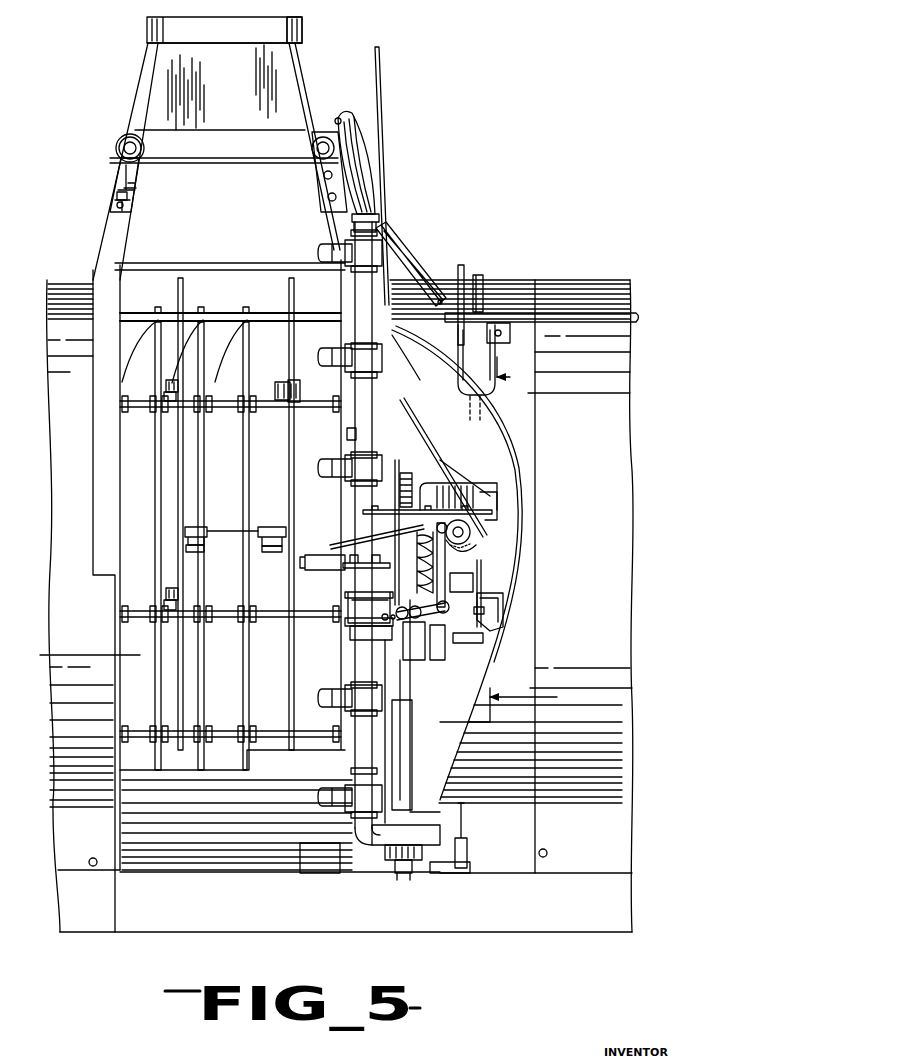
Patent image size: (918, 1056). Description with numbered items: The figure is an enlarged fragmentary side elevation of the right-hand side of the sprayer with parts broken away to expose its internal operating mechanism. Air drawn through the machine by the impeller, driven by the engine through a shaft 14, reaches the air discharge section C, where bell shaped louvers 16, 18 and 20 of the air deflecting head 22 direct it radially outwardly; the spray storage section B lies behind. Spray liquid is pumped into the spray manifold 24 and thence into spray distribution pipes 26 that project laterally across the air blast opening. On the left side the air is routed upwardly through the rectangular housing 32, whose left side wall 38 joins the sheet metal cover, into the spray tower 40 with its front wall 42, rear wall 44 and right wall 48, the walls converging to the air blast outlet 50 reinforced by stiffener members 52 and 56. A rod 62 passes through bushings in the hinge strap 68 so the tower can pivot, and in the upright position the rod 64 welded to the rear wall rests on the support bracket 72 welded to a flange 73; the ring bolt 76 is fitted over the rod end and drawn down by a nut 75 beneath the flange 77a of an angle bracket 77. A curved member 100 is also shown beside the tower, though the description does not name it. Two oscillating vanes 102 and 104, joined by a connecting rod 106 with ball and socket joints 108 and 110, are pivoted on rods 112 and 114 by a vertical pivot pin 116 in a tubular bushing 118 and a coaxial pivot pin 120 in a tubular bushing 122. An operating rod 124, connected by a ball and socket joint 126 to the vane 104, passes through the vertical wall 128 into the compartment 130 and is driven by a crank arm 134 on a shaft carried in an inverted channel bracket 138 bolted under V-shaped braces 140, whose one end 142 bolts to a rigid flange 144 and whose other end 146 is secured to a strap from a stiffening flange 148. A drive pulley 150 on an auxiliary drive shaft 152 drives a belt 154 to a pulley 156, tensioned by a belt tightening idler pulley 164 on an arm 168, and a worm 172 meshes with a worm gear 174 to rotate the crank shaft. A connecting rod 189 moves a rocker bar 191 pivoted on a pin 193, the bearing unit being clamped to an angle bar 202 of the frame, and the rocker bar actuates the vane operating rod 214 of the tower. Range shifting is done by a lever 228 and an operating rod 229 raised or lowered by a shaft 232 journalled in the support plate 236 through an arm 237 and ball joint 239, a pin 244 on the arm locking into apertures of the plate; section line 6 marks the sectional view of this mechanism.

The shaft 14 is at (358, 624).
The bell shaped louver 16 is at (158, 458).
The bell shaped louver 18 is at (202, 468).
The bell shaped louver 20 is at (246, 468).
The air deflecting head 22 is at (140, 537).
The spray manifold 24 is at (356, 297).
The spray distribution pipes 26 is at (333, 250).
The rectangular housing 32 is at (130, 240).
The left side wall 38 is at (250, 240).
The spray tower 40 is at (150, 72).
The front wall 42 is at (301, 75).
The rear wall 44 is at (147, 98).
The right wall 48 is at (243, 84).
The air blast outlet 50 is at (186, 38).
The stiffener member 52 is at (302, 29).
The stiffener member 56 is at (147, 30).
The rod 62 is at (312, 148).
The rod 64 is at (128, 138).
The hinge strap 68 is at (322, 185).
The support bracket 72 is at (110, 163).
The flange 73 is at (106, 260).
The nut 75 is at (113, 193).
The ring bolt 76 is at (117, 146).
The angle bracket 77 is at (129, 205).
The flange 77a is at (134, 185).
The curved arm 100 is at (357, 168).
The oscillating vane 102 is at (178, 505).
The oscillating vane 104 is at (290, 513).
The connecting rod 106 is at (215, 528).
The ball and socket joint 108 is at (200, 545).
The ball and socket joint 110 is at (270, 546).
The rod 112 is at (262, 398).
The rod 114 is at (224, 617).
The vertical pivot pin 116 is at (164, 396).
The tubular bushing 118 is at (166, 386).
The vertical pivot pin 120 is at (166, 602).
The tubular bushing 122 is at (168, 590).
The operating rod 124 is at (363, 540).
The ball and socket joint 126 is at (312, 560).
The vertical wall 128 is at (350, 432).
The compartment 130 is at (507, 450).
The crank arm 134 is at (490, 545).
The inverted channel bracket 138 is at (498, 522).
The V-shaped brace 140 is at (423, 426).
The brace end 142 is at (398, 383).
The rigid flange 144 is at (350, 391).
The brace end 146 is at (365, 512).
The stiffening flange 148 is at (375, 588).
The drive pulley 150 is at (440, 813).
The auxiliary drive shaft 152 is at (437, 846).
The belt 154 is at (412, 740).
The pulley 156 is at (425, 462).
The belt tightening idler pulley 164 is at (412, 676).
The arm 168 is at (425, 655).
The worm 172 is at (470, 492).
The worm gear 174 is at (488, 562).
The connecting rod 189 is at (450, 575).
The rocker bar 191 is at (386, 603).
The pin 193 is at (434, 645).
The angle bar 202 is at (410, 868).
The vane operating rod 214 is at (380, 97).
The lever 228 is at (467, 637).
The operating rod 229 is at (495, 362).
The shaft 232 is at (618, 318).
The support plate 236 is at (458, 338).
The arm 237 is at (462, 298).
The ball joint 239 is at (485, 292).
The pin 244 is at (442, 298).
The section line 6 is at (498, 549).
The spray storage section B is at (605, 492).
The air discharge section C is at (145, 655).